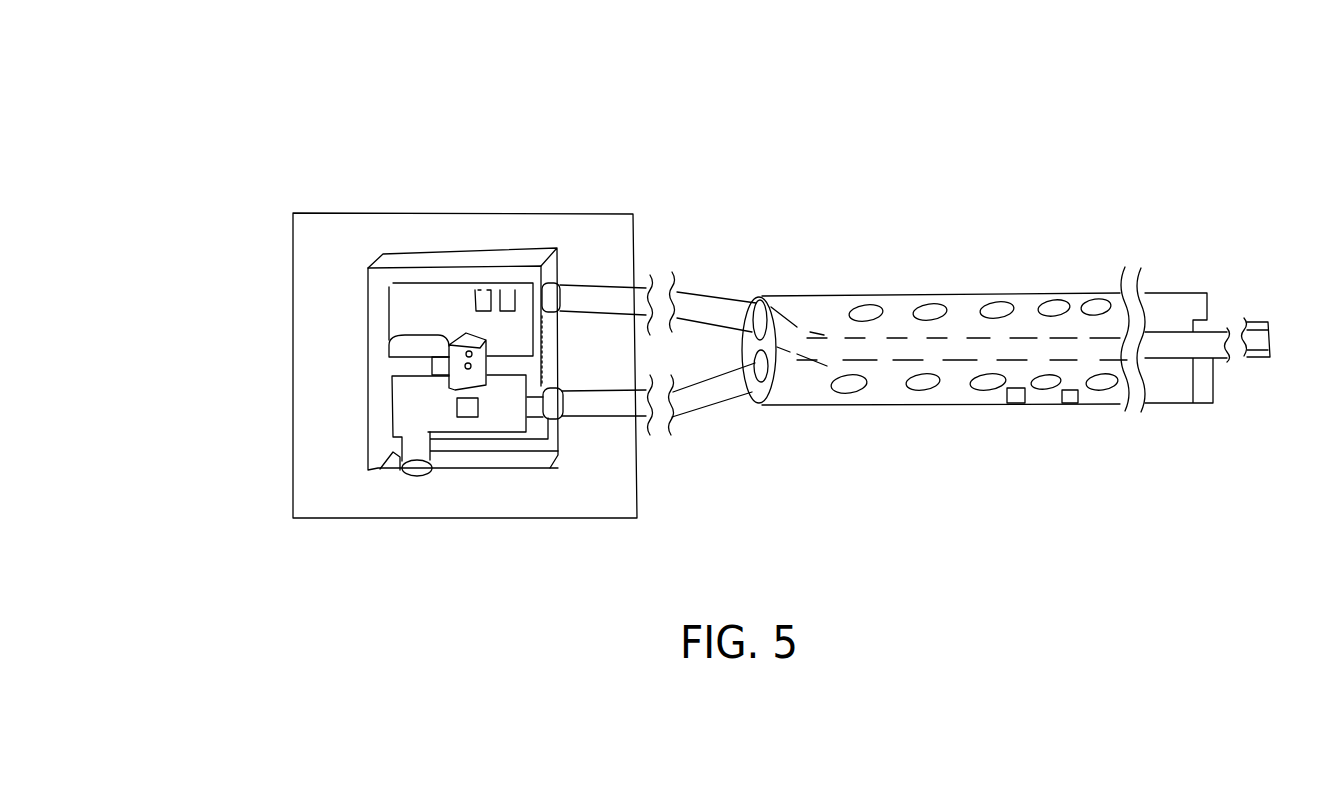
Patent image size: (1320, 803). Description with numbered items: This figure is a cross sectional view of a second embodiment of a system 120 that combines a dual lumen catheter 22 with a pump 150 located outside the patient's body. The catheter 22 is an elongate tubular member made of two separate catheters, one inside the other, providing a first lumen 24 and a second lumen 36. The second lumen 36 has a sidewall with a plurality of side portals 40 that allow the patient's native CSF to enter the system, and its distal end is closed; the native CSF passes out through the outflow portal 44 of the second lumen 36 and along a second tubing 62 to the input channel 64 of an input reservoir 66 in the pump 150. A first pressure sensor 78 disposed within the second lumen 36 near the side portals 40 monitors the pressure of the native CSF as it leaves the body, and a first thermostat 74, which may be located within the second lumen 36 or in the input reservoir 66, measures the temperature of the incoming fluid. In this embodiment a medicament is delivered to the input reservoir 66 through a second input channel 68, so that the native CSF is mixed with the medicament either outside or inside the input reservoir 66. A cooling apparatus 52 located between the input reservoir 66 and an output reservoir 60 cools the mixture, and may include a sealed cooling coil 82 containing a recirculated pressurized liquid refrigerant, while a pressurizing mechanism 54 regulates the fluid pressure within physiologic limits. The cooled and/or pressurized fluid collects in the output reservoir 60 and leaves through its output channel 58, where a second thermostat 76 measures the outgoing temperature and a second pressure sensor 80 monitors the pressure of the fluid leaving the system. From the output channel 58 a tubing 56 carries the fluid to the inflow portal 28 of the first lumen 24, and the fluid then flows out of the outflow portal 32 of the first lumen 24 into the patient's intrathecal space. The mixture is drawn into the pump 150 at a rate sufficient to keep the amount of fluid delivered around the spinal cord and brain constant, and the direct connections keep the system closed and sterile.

The system 120 is at (250, 128).
The pump 150 is at (293, 258).
The output reservoir 60 is at (409, 307).
The second pressure sensor 80 is at (479, 300).
The second thermostat 76 is at (510, 300).
The output channel 58 is at (556, 296).
The tubing 56 is at (700, 297).
The second tubing 62 is at (692, 420).
The outflow portal 44 is at (758, 400).
The input channel 64 is at (556, 418).
The cooling apparatus 52 is at (389, 354).
The pressurizing mechanism 54 is at (433, 362).
The sealed cooling coil 82 is at (491, 377).
The input reservoir 66 is at (413, 423).
The second input channel 68 is at (417, 477).
The first thermostat 74 is at (476, 418).
The first pressure sensor 78 is at (1018, 405).
The inflow portal 28 is at (782, 297).
The side portal 40 is at (997, 297).
The second lumen 36 is at (891, 399).
The catheter 22 is at (1057, 266).
The first lumen 24 is at (1172, 332).
The outflow portal 32 is at (1268, 357).